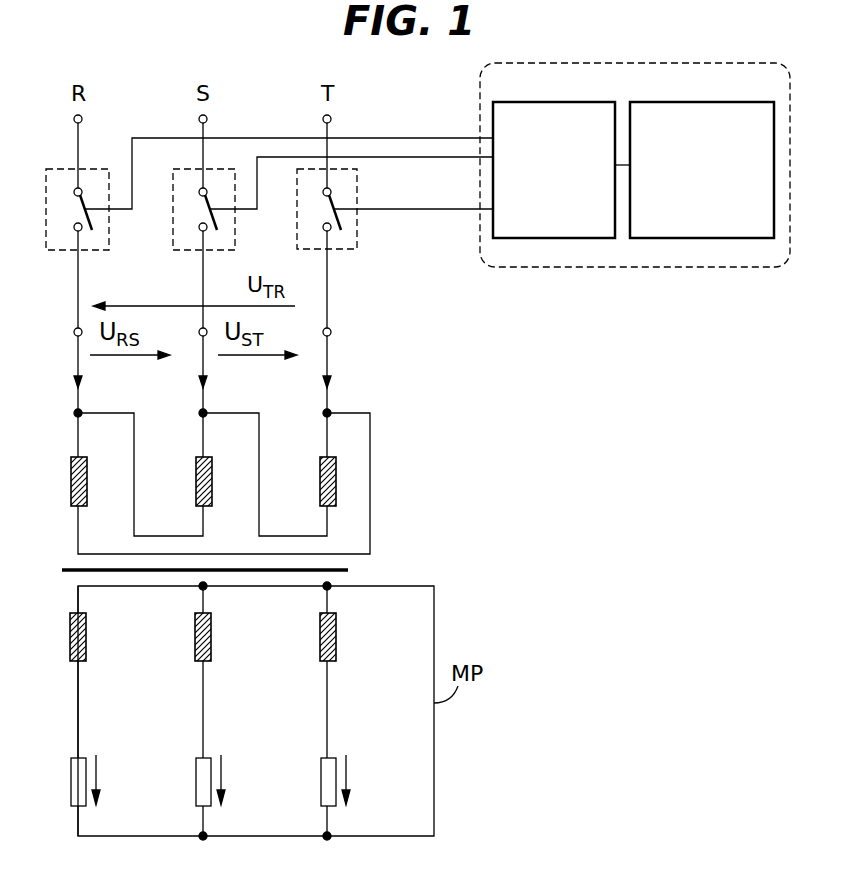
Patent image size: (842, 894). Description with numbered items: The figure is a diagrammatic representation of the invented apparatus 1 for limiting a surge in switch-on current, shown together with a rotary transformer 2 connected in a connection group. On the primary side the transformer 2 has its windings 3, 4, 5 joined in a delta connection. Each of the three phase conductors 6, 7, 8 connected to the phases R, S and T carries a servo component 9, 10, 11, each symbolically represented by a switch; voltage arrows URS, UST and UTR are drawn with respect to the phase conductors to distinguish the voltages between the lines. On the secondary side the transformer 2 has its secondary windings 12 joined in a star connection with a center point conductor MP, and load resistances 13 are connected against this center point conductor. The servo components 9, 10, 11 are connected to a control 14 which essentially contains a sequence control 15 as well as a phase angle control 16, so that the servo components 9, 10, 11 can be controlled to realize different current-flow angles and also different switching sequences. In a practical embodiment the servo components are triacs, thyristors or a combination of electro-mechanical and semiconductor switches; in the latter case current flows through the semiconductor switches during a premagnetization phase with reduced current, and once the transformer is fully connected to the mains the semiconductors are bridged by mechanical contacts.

The apparatus 1 is at (482, 320).
The rotary transformer 2 is at (394, 528).
The winding 3 is at (71, 487).
The winding 4 is at (196, 487).
The winding 5 is at (320, 487).
The phase conductor 6 is at (77, 289).
The phase conductor 7 is at (202, 289).
The phase conductor 8 is at (326, 289).
The servo component 9 is at (46, 226).
The servo component 10 is at (173, 226).
The servo component 11 is at (297, 226).
The secondary windings 12 is at (340, 638).
The load resistances 13 is at (71, 790).
The control 14 is at (636, 58).
The sequence control 15 is at (698, 101).
The phase angle control 16 is at (560, 101).